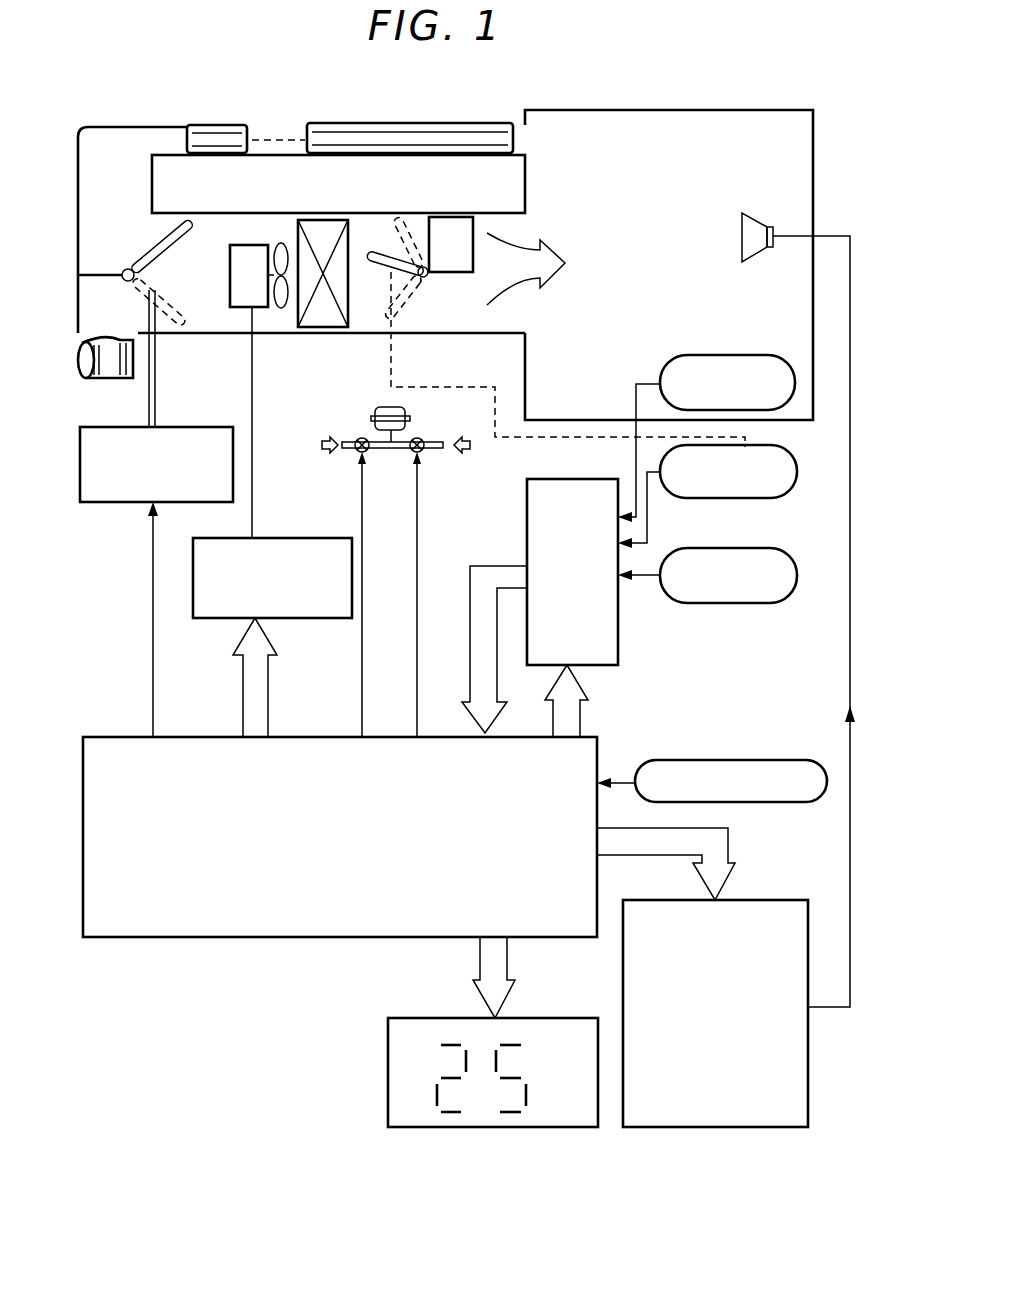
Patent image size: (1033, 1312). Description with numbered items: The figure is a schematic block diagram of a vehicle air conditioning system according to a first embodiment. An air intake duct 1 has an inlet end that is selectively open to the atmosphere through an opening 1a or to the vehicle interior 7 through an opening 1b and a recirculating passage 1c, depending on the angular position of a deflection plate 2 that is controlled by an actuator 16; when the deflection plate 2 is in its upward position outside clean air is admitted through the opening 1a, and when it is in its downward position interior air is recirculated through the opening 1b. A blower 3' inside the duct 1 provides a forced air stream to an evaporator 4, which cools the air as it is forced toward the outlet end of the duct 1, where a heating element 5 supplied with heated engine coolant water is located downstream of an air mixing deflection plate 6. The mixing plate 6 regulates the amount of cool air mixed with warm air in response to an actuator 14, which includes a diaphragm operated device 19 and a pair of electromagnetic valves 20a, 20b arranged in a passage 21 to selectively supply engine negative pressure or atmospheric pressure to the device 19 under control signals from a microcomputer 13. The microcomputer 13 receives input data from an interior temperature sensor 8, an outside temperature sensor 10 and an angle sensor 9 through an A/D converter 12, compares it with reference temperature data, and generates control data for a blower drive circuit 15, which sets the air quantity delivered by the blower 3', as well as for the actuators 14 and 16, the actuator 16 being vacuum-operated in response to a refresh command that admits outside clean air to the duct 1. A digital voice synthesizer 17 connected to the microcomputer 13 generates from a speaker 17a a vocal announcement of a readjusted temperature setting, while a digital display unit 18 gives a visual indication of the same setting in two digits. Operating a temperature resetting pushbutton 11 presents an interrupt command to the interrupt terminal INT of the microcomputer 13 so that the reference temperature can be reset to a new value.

The air intake duct 1 is at (200, 213).
The opening 1a is at (107, 363).
The opening 1b is at (128, 127).
The recirculating passage 1c is at (385, 124).
The deflection plate 2 is at (143, 253).
The blower 3' is at (259, 352).
The evaporator 4 is at (323, 220).
The heating element 5 is at (440, 217).
The air mixing deflection plate 6 is at (372, 253).
The vehicle interior 7 is at (600, 111).
The interior temperature sensor 8 is at (742, 355).
The angle sensor 9 is at (797, 458).
The outside temperature sensor 10 is at (797, 552).
The temperature resetting pushbutton 11 is at (767, 760).
The A/D converter 12 is at (618, 645).
The microcomputer 13 is at (243, 937).
The actuator 14 is at (430, 492).
The drive circuit 15 is at (316, 620).
The actuator 16 is at (110, 503).
The digital voice synthesizer 17 is at (787, 900).
The speaker 17a is at (756, 213).
The digital display unit 18 is at (568, 1018).
The diaphragm operated device 19 is at (375, 413).
The electromagnetic valve 20a is at (360, 455).
The electromagnetic valve 20b is at (412, 456).
The passage 21 is at (433, 441).